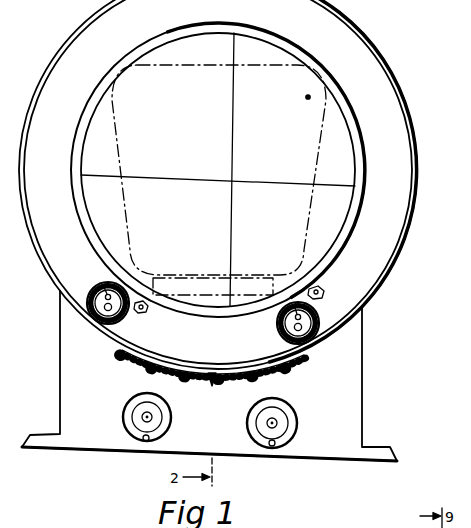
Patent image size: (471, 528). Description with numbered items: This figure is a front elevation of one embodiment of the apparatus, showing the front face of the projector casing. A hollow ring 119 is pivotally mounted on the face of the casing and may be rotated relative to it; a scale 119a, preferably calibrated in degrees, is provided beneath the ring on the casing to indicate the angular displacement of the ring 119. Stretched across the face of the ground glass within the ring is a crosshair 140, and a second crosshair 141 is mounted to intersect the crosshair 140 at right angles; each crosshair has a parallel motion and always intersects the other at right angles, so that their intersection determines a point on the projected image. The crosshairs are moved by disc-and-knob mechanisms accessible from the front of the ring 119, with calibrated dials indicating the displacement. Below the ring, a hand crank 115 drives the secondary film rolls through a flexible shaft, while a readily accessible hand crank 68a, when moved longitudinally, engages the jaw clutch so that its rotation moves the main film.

The hollow ring 119 is at (393, 208).
The scale 119a is at (316, 362).
The crosshair 140 is at (233, 127).
The second crosshair 141 is at (262, 184).
The hand crank 115 is at (139, 429).
The hand crank 68a is at (280, 448).